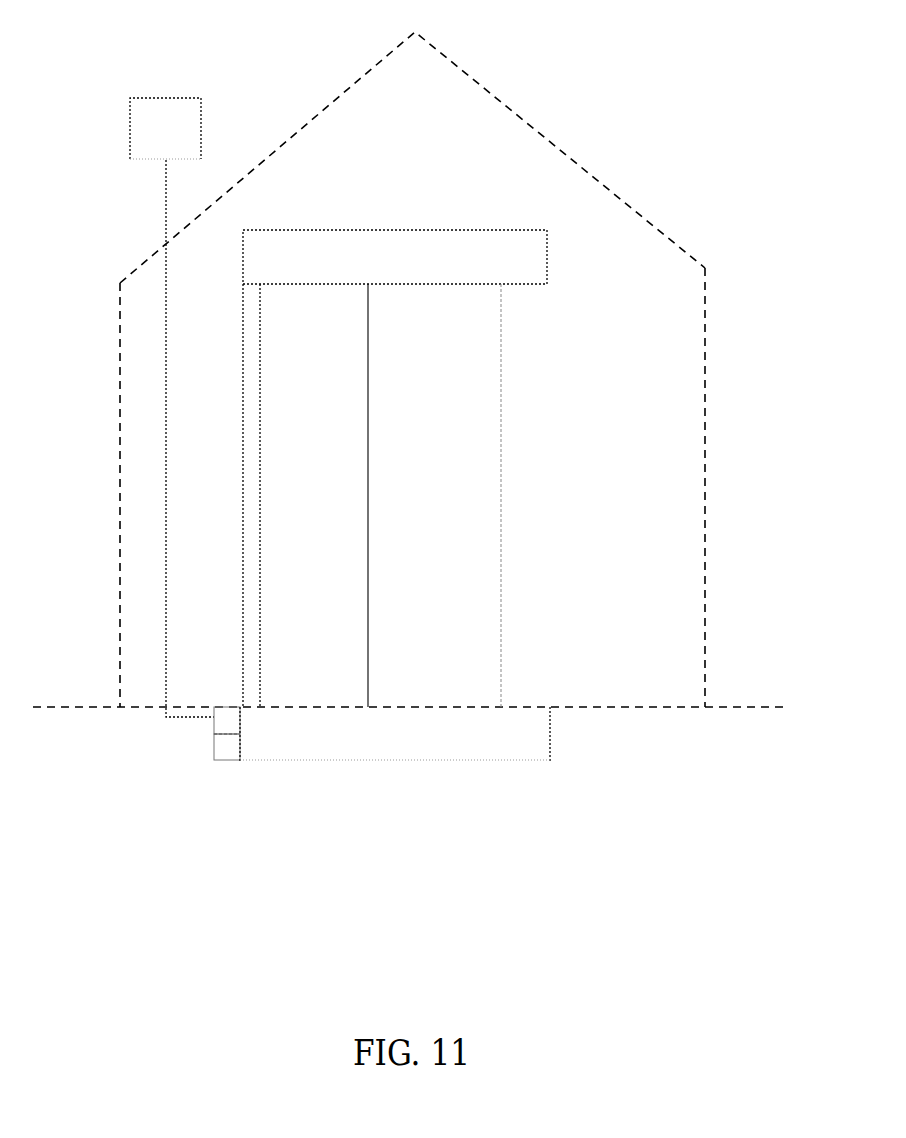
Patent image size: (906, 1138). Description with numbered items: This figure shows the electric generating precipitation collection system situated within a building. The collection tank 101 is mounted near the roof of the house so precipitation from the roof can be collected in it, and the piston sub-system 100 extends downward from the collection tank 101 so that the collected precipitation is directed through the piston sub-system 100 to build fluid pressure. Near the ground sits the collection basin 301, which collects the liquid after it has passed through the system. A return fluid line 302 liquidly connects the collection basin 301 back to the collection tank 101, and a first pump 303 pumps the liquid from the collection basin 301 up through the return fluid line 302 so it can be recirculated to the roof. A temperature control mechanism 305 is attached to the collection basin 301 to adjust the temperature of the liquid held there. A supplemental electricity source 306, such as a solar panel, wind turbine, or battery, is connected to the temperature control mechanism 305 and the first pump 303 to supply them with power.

The piston sub-system 100 is at (470, 449).
The collection tank 101 is at (343, 247).
The collection basin 301 is at (468, 745).
The return fluid line 302 is at (253, 422).
The first pump 303 is at (228, 720).
The temperature control mechanism 305 is at (227, 752).
The supplemental electricity source 306 is at (153, 117).